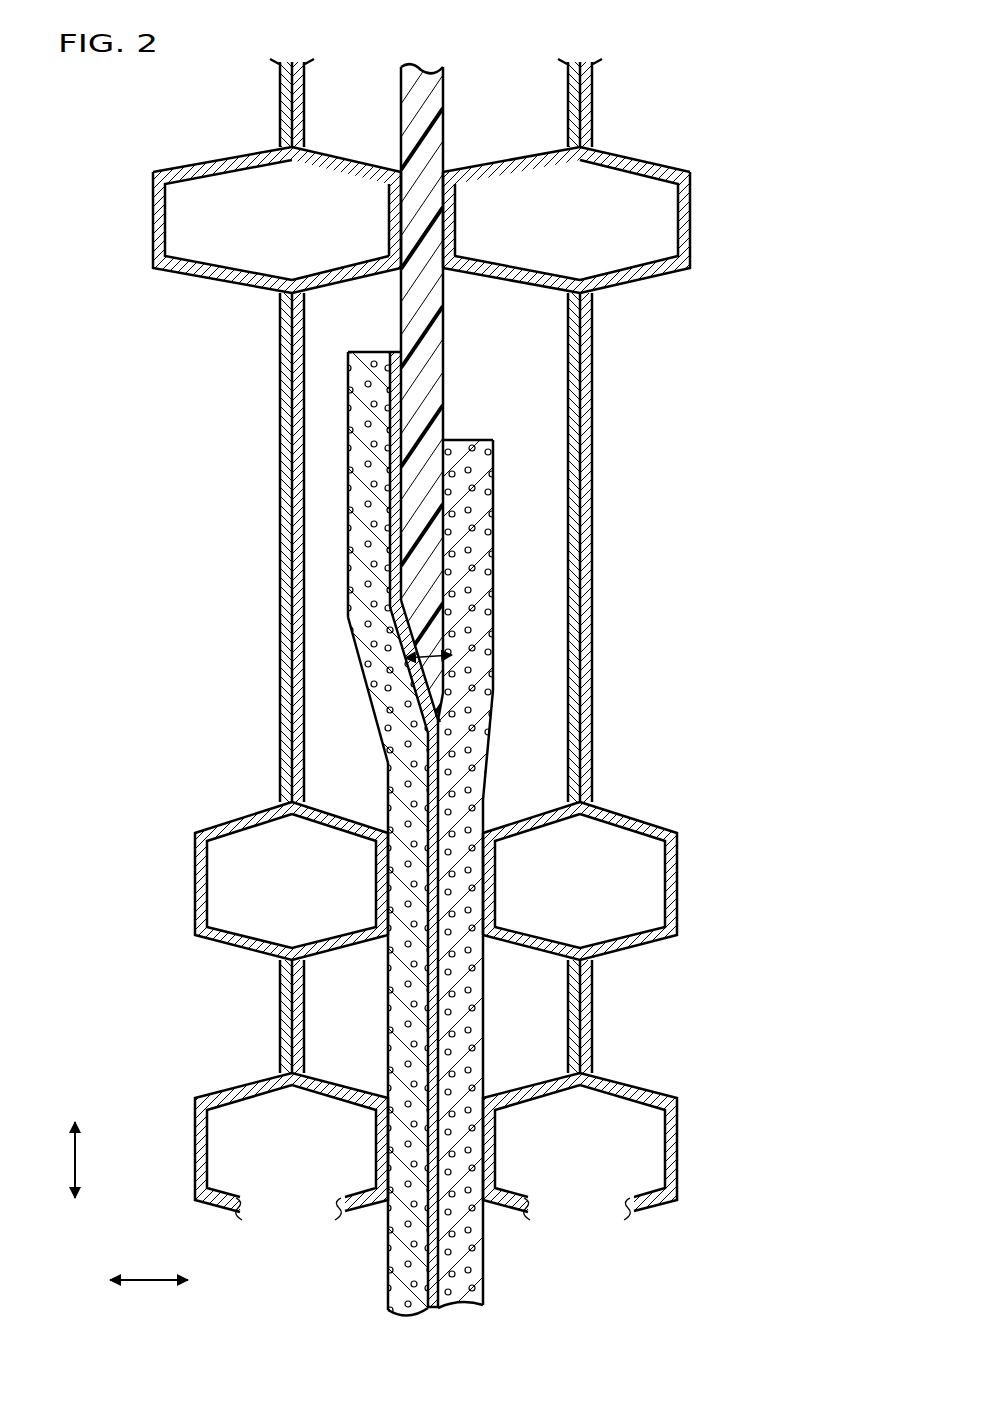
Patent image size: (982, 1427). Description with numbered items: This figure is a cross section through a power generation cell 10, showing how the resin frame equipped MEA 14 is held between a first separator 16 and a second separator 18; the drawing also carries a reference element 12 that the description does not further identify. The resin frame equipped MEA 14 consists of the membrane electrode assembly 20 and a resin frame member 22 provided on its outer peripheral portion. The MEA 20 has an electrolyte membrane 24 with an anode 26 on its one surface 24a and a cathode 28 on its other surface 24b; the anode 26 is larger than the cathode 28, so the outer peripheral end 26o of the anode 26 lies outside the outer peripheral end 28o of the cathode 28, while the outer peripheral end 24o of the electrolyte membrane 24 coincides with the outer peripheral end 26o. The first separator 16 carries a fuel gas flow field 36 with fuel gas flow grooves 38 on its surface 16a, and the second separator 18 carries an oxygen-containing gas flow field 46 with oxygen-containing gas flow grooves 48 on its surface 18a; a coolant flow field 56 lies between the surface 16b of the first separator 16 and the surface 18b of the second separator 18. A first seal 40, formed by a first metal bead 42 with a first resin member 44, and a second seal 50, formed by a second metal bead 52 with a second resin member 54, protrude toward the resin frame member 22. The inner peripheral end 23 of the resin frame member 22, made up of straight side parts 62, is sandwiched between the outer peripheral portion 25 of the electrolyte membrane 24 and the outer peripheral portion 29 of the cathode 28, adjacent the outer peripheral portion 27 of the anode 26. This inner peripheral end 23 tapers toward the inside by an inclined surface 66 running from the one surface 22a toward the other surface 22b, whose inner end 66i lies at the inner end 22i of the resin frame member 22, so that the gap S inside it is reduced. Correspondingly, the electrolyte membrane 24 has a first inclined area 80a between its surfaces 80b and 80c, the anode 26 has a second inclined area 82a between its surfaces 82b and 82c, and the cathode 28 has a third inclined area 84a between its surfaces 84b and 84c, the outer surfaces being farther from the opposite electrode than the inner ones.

The power generation cell 10 is at (502, 56).
The fuel cell 12 is at (452, 34).
The resin frame equipped MEA 14 is at (413, 53).
The first separator 16 is at (335, 1096).
The surface of first separator facing the MEA 16a is at (440, 905).
The surface of first separator 16b is at (376, 906).
The second separator 18 is at (190, 1120).
The surface of second separator facing the MEA 18a is at (470, 851).
The surface of second separator 18b is at (500, 854).
The membrane electrode assembly 20 is at (557, 1223).
The resin frame member 22 is at (403, 95).
The one surface of resin frame member 22a is at (401, 130).
The other surface of resin frame member 22b is at (445, 131).
The inner end of resin frame member 22i is at (440, 706).
The inner peripheral end of resin frame member 23 is at (420, 568).
The electrolyte membrane 24 is at (433, 1257).
The one surface of electrolyte membrane 24a is at (435, 1160).
The other surface of electrolyte membrane 24b is at (438, 1173).
The outer peripheral end of electrolyte membrane 24o is at (392, 352).
The outer peripheral portion of electrolyte membrane 25 is at (397, 465).
The anode 26 is at (413, 1285).
The outer peripheral end of anode 26o is at (373, 352).
The outer peripheral portion of anode 27 is at (362, 525).
The cathode 28 is at (473, 1240).
The outer peripheral end of cathode 28o is at (474, 440).
The outer peripheral portion of cathode 29 is at (490, 605).
The fuel gas flow field 36 is at (318, 1043).
The fuel gas flow grooves 38 is at (296, 1005).
The first seal 40 is at (313, 190).
The first metal bead 42 is at (346, 165).
The first resin member 44 is at (395, 242).
The oxygen-containing gas flow field 46 is at (555, 1050).
The oxygen-containing gas flow grooves 48 is at (577, 1026).
The second seal 50 is at (529, 190).
The second metal bead 52 is at (500, 165).
The second resin member 54 is at (448, 243).
The coolant flow field 56 is at (230, 850).
The side parts 62 is at (432, 692).
The inclined surface 66 is at (428, 680).
The inner end of inclined surface 66i is at (442, 700).
The first inclined area 80a is at (435, 697).
The surface of electrolyte membrane facing the anode outside the first inclined area 80b is at (388, 430).
The surface of electrolyte membrane facing the anode inside the first inclined area 80c is at (428, 790).
The second inclined area 82a is at (363, 672).
The surface of anode facing the first separator outside the second inclined area 82b is at (347, 550).
The surface of anode facing the first separator inside the second inclined area 82c is at (388, 770).
The third inclined area 84a is at (488, 740).
The surface of cathode facing the second separator outside the third inclined area 84b is at (492, 520).
The surface of cathode facing the second separator inside the third inclined area 84c is at (485, 980).
The gap S is at (438, 708).